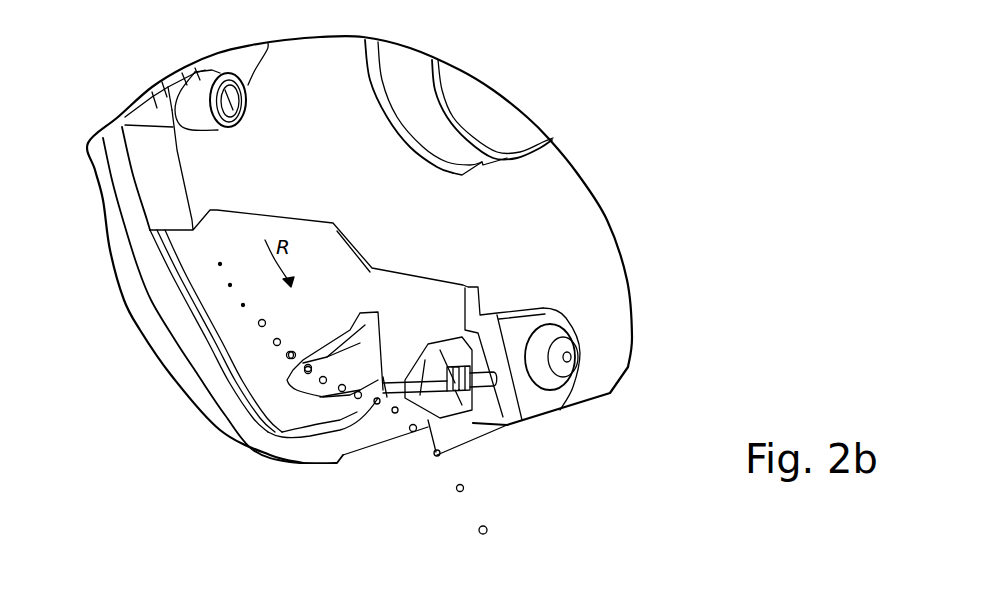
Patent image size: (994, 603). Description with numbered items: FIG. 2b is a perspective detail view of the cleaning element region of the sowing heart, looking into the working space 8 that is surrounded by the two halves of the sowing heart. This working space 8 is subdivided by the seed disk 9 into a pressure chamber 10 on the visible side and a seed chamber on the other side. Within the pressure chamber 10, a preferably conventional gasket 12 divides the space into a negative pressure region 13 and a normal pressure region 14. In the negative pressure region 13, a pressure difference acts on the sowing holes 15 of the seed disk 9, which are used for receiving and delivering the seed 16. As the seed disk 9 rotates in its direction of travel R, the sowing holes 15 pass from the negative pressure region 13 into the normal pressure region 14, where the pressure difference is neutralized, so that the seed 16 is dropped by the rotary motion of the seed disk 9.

The working space 8 is at (257, 270).
The seed disk 9 is at (193, 268).
The pressure chamber 10 is at (303, 373).
The gasket 12 is at (303, 412).
The negative pressure region 13 is at (361, 338).
The normal pressure region 14 is at (377, 434).
The sowing holes 15 is at (210, 240).
The seed 16 is at (463, 486).